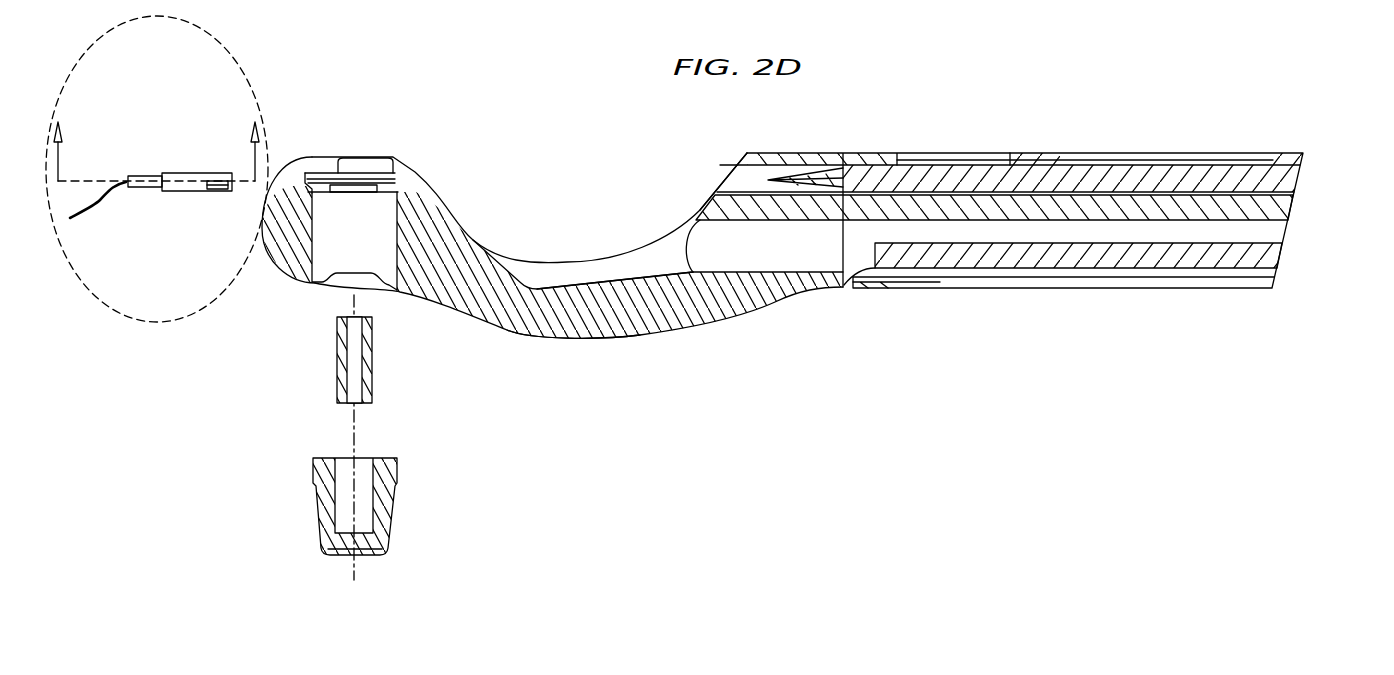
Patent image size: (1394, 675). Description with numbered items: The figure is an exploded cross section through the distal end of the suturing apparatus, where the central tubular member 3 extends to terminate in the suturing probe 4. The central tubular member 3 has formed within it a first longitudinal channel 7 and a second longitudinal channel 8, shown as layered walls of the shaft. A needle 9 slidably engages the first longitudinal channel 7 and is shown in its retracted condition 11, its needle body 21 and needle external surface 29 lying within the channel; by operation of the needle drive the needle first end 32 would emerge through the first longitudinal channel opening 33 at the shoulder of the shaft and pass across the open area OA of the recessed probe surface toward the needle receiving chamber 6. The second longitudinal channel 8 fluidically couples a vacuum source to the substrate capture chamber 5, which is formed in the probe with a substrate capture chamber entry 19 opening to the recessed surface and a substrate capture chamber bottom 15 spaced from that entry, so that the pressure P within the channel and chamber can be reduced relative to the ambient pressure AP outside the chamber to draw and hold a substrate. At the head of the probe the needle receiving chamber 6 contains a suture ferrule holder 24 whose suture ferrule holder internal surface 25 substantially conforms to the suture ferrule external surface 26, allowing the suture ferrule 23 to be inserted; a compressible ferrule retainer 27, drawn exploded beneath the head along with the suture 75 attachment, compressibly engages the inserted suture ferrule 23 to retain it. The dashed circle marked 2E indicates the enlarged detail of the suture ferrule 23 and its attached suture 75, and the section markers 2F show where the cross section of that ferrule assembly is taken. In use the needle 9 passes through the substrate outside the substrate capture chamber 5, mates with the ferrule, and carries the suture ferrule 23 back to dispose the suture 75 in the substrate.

The central tubular member 3 is at (1060, 141).
The suturing probe 4 is at (328, 52).
The substrate capture chamber 5 is at (640, 280).
The needle receiving chamber 6 is at (388, 140).
The first longitudinal channel 7 is at (1308, 230).
The second longitudinal channel 8 is at (1310, 178).
The needle 9 is at (1071, 131).
The retracted condition 11 is at (1185, 170).
The substrate capture chamber bottom 15 is at (636, 378).
The substrate capture chamber entry 19 is at (606, 258).
The needle body 21 is at (980, 180).
The suture ferrule 23 is at (177, 140).
The suture ferrule holder 24 is at (294, 174).
The suture ferrule holder internal surface 25 is at (343, 172).
The suture ferrule external surface 26 is at (186, 192).
The compressible ferrule retainer 27 is at (327, 349).
The needle external surface 29 is at (931, 163).
The needle first end 32 is at (790, 168).
The first longitudinal channel opening 33 is at (723, 165).
The suture 75 is at (124, 183).
The detail view reference 2E is at (217, 38).
The section line 2F is at (154, 151).
The open area OA is at (563, 237).
The pressure P is at (714, 255).
The ambient pressure AP is at (1138, 90).